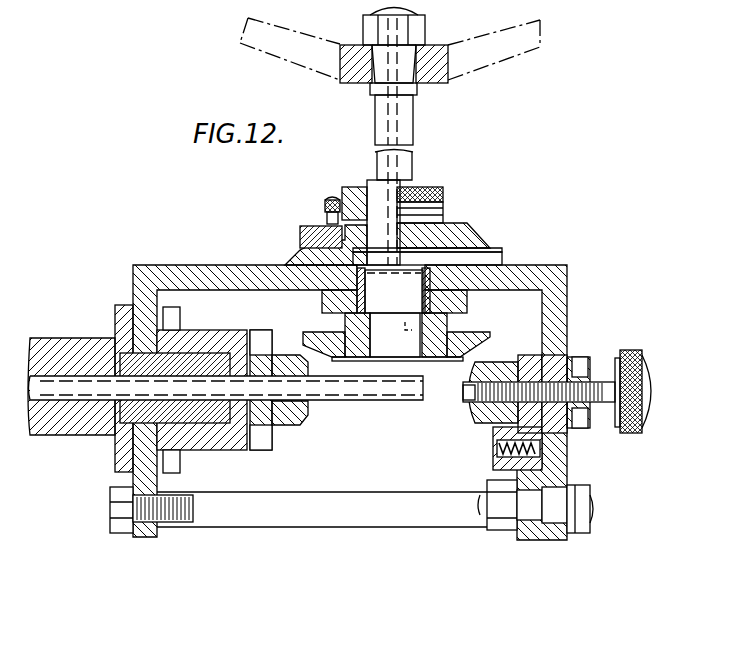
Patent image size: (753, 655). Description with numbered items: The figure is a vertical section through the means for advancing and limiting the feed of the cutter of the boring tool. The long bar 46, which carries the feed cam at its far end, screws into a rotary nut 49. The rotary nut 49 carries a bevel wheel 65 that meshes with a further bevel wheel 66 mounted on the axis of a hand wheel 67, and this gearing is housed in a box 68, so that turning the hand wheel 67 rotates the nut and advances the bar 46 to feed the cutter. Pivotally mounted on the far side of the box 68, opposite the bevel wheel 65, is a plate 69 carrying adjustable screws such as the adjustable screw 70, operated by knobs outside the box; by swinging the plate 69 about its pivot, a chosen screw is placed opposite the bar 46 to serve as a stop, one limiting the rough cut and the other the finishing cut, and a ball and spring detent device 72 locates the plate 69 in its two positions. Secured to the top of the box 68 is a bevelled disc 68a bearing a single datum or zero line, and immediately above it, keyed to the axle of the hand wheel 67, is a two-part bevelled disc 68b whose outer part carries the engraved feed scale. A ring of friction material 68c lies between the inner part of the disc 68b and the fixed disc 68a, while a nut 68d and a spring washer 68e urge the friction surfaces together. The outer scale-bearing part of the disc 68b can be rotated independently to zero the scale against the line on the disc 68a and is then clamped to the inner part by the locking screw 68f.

The long bar 46 is at (400, 393).
The rotary nut 49 is at (256, 353).
The bevel wheel 65 is at (300, 432).
The bevel wheel 66 is at (317, 337).
The hand wheel 67 is at (478, 62).
The box 68 is at (540, 263).
The bevelled disc 68a is at (292, 258).
The two-part bevelled disc 68b is at (470, 244).
The ring of friction material 68c is at (318, 242).
The nut 68d is at (445, 192).
The spring washer 68e is at (402, 216).
The locking screw 68f is at (327, 202).
The plate 69 is at (530, 483).
The adjustable screw 70 is at (630, 350).
The ball and spring detent device 72 is at (493, 448).